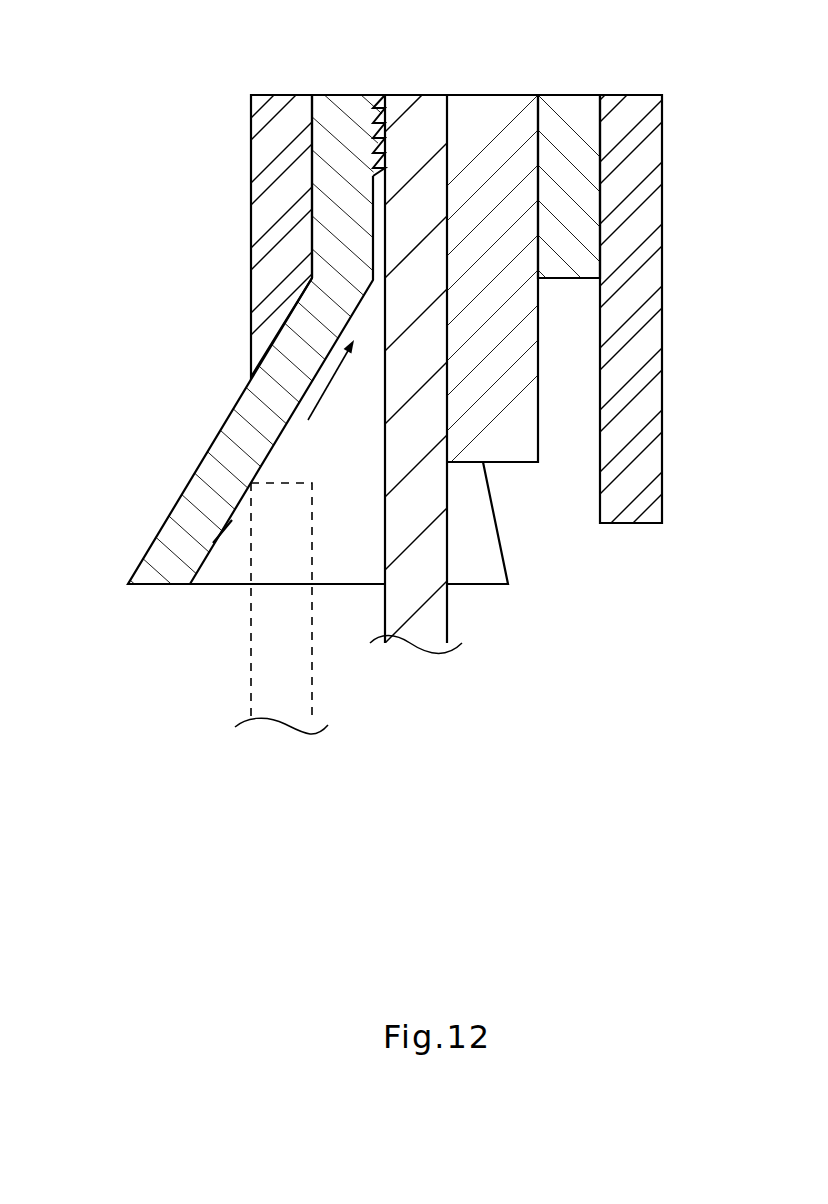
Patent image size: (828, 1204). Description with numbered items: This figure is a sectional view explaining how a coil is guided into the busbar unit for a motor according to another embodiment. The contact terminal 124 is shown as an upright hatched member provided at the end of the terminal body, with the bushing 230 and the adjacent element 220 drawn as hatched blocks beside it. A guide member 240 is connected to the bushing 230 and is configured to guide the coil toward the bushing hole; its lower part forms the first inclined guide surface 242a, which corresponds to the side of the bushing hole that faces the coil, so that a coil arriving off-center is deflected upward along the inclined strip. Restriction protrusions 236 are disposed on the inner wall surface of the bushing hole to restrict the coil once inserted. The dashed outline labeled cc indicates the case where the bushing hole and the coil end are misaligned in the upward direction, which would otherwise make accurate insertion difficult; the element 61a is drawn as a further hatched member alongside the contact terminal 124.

The restriction protrusions 236 is at (377, 95).
The guide member 61a is at (428, 103).
The contact terminal 124 is at (497, 103).
The bushing 230 is at (573, 103).
The outer wall 220 is at (633, 103).
The guide member 240 is at (180, 476).
The first inclined guide surface 242a is at (212, 545).
The misalignment cc is at (251, 663).